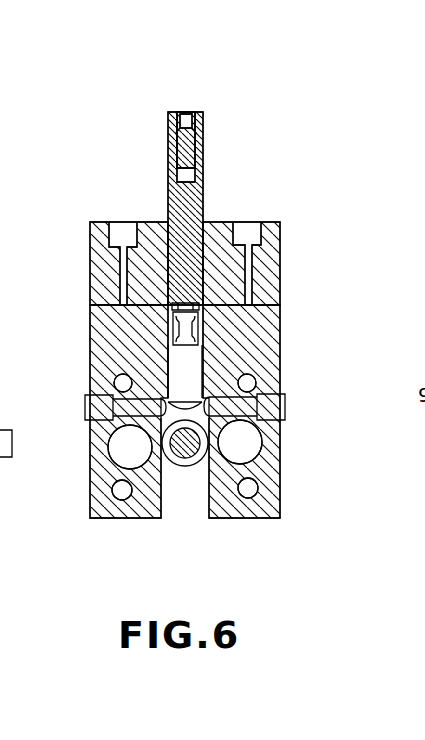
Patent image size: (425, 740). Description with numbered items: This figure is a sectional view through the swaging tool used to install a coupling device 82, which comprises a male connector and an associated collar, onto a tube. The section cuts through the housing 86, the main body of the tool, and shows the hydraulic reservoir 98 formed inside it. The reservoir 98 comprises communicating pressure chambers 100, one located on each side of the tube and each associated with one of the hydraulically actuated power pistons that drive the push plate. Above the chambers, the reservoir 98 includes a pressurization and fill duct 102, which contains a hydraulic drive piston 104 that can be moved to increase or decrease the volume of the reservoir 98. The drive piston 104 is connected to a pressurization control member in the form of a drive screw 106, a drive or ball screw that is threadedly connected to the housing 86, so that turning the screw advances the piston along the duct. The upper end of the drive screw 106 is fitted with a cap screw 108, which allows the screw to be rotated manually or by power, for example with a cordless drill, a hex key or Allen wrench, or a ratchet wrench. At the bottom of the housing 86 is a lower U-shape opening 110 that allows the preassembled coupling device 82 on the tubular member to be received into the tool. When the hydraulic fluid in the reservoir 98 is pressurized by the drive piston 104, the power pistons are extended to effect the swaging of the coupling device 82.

The coupling device 82 is at (179, 470).
The housing 86 is at (258, 330).
The hydraulic reservoir 98 is at (291, 407).
The pressure chambers 100 is at (112, 433).
The pressurization and fill duct 102 is at (190, 376).
The hydraulic drive piston 104 is at (190, 333).
The drive screw 106 is at (192, 203).
The cap screw 108 is at (195, 122).
The U-shape opening 110 is at (208, 501).